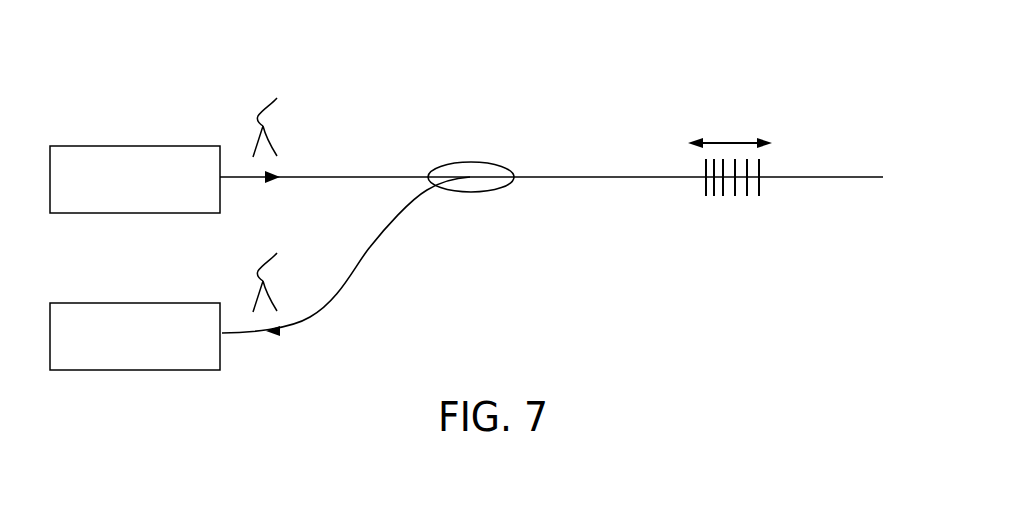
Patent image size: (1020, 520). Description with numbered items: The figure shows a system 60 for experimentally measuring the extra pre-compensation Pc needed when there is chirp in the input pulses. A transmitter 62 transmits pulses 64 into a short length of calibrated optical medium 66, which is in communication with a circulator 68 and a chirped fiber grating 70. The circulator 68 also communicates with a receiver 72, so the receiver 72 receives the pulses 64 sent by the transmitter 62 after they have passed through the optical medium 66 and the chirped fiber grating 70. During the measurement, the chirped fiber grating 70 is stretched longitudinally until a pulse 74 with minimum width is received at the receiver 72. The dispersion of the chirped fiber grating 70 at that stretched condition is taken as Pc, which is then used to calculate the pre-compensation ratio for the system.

The system 60 is at (610, 44).
The transmitter 62 is at (146, 203).
The pulses 64 is at (267, 117).
The calibrated optical medium 66 is at (330, 177).
The circulator 68 is at (463, 150).
The chirped fiber grating 70 is at (768, 210).
The receiver 72 is at (146, 360).
The pulse with minimum width 74 is at (267, 272).